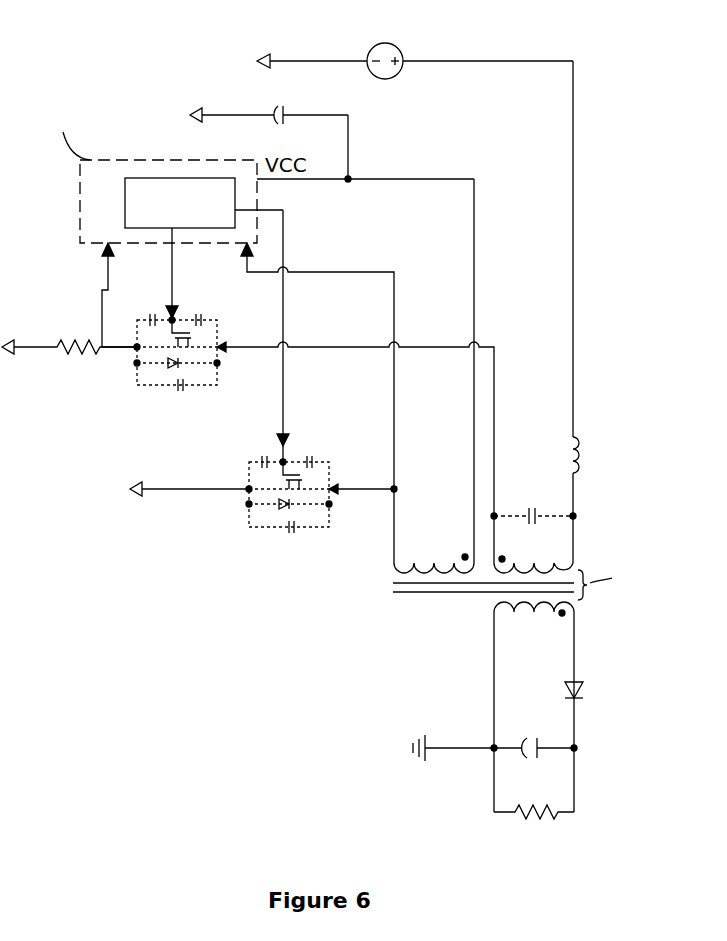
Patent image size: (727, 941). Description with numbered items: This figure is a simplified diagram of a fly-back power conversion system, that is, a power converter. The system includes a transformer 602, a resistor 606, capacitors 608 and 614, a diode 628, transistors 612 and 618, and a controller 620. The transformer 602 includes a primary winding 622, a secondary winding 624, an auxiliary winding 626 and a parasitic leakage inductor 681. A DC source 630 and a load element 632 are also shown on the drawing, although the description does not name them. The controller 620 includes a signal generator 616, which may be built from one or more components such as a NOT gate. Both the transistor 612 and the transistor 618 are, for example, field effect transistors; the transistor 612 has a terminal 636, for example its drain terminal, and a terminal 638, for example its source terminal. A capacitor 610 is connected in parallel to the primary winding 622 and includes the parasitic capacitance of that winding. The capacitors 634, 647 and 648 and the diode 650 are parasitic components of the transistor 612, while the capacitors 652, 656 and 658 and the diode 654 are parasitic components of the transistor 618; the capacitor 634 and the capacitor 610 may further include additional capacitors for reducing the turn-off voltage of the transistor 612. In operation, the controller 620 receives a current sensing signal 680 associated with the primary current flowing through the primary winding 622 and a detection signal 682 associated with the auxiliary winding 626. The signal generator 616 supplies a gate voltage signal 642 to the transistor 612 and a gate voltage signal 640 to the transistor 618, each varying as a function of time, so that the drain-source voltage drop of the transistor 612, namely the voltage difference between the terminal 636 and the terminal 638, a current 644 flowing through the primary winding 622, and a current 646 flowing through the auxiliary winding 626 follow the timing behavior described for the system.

The transformer 602 is at (488, 581).
The resistor 606 is at (78, 352).
The capacitor 608 is at (284, 114).
The capacitor 610 is at (537, 522).
The transistor 612 is at (178, 356).
The capacitor 614 is at (538, 745).
The signal generator 616 is at (235, 200).
The transistor 618 is at (248, 498).
The controller 620 is at (80, 183).
The primary winding 622 is at (573, 563).
The secondary winding 624 is at (580, 612).
The auxiliary winding 626 is at (394, 567).
The diode 628 is at (582, 690).
The DC power source 630 is at (400, 57).
The load resistor 632 is at (574, 766).
The capacitor 634 is at (178, 390).
The terminal 636 is at (219, 348).
The terminal 638 is at (137, 349).
The gate voltage signal 640 is at (283, 400).
The gate voltage signal 642 is at (172, 278).
The current 644 is at (421, 347).
The current 646 is at (397, 488).
The capacitor 647 is at (200, 319).
The capacitor 648 is at (150, 318).
The diode 650 is at (168, 368).
The capacitor 652 is at (292, 532).
The diode 654 is at (283, 507).
The capacitor 656 is at (263, 460).
The capacitor 658 is at (309, 460).
The current sensing signal 680 is at (108, 268).
The parasitic leakage inductor 681 is at (580, 462).
The detection signal 682 is at (343, 270).